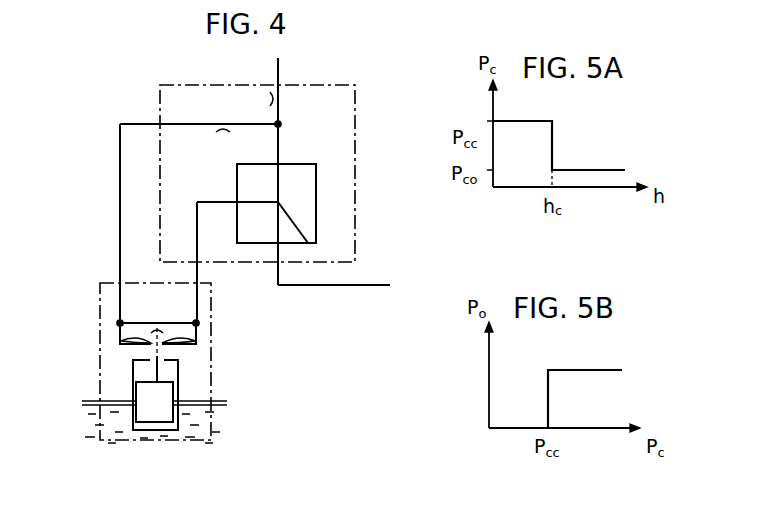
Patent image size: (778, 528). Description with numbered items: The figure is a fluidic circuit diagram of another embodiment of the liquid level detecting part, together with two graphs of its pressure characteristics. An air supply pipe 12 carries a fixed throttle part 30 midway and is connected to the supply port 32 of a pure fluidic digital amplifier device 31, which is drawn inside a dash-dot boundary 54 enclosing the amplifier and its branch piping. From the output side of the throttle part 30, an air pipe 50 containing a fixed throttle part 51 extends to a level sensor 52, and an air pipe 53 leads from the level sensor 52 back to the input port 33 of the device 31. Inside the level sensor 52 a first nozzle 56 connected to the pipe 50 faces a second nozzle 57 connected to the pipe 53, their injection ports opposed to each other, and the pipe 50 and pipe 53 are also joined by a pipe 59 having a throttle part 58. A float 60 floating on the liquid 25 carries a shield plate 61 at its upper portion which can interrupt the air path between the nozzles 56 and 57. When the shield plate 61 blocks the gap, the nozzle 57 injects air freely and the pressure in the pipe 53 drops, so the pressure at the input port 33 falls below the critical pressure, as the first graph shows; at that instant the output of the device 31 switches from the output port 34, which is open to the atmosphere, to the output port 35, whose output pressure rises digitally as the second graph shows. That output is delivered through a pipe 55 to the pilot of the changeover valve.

The air supply pipe 12 is at (283, 72).
The liquid 25 is at (93, 403).
The fixed throttle part 30 is at (288, 92).
The pure fluidic digital amplifier device 31 is at (316, 200).
The supply port 32 is at (283, 164).
The input port 33 is at (237, 202).
The output port 34 is at (310, 243).
The output port 35 is at (272, 250).
The air pipe 50 is at (266, 126).
The fixed throttle part 51 is at (226, 116).
The level sensor 52 is at (211, 379).
The air pipe 53 is at (197, 250).
The valve control unit 54 is at (356, 121).
The pipe 55 is at (330, 286).
The first nozzle 56 is at (118, 339).
The second nozzle 57 is at (199, 342).
The throttle part 58 is at (162, 315).
The pipe 59 is at (178, 320).
The float 60 is at (152, 418).
The shield plate 61 is at (150, 352).